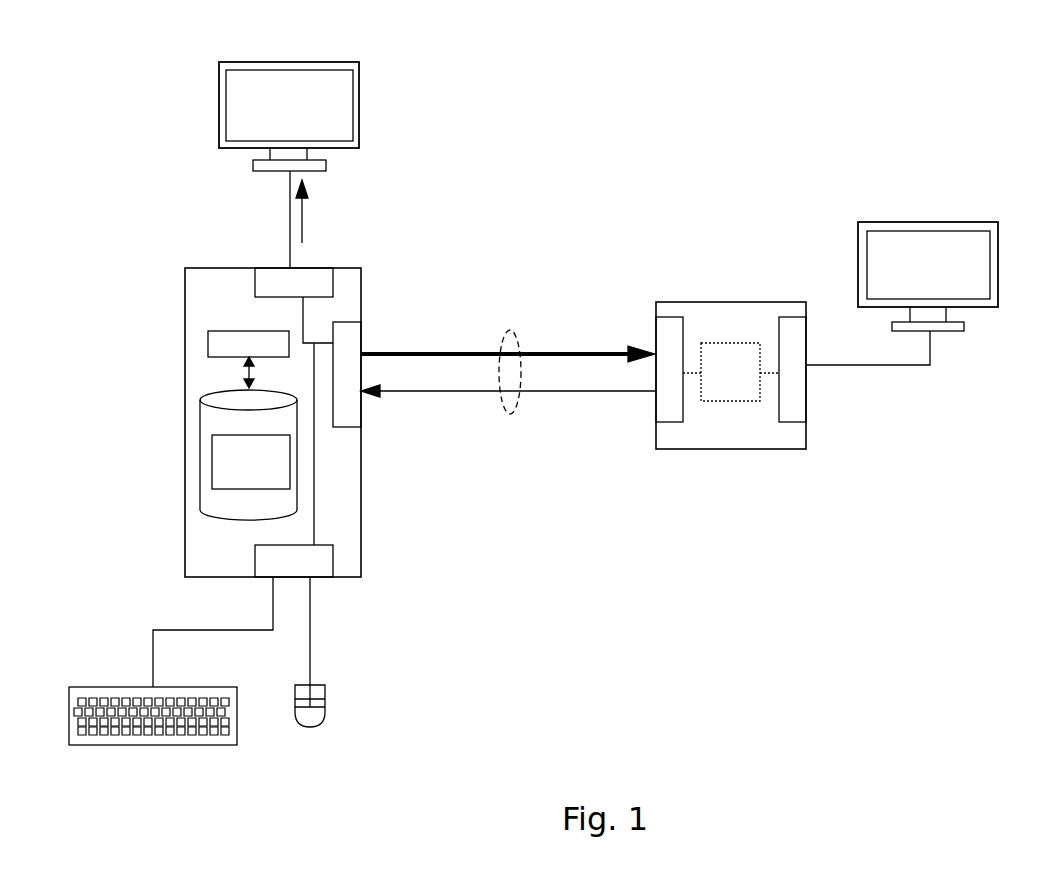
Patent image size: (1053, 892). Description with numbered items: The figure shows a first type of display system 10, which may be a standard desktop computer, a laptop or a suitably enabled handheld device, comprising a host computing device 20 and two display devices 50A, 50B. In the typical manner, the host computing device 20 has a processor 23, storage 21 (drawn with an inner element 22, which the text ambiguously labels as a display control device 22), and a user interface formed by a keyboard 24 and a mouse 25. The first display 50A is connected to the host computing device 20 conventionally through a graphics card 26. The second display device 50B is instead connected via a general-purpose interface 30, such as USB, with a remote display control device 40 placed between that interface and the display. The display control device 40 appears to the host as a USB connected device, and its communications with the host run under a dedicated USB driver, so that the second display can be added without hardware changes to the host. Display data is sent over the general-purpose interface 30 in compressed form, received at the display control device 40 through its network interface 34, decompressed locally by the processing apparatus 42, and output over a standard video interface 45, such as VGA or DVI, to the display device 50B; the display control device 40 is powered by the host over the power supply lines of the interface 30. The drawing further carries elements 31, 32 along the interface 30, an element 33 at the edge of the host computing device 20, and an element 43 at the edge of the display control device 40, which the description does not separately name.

The display system 10 is at (853, 48).
The host computing device 20 is at (352, 268).
The storage 21 is at (200, 413).
The display control device 22 is at (212, 471).
The processor 23 is at (208, 341).
The keyboard 24 is at (69, 740).
The mouse 25 is at (322, 722).
The graphics card 26 is at (265, 268).
The general-purpose interface 30 is at (513, 332).
The transmission path 31 is at (458, 352).
The reception path 32 is at (470, 393).
The communication unit 33 is at (361, 338).
The network interface 34 is at (656, 340).
The display control device 40 is at (723, 302).
The processing apparatus 42 is at (725, 401).
The display interface 43 is at (806, 395).
The standard video interface 45 is at (890, 367).
The first display 50A is at (337, 62).
The second display device 50B is at (975, 222).